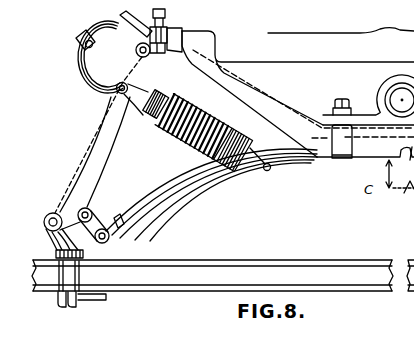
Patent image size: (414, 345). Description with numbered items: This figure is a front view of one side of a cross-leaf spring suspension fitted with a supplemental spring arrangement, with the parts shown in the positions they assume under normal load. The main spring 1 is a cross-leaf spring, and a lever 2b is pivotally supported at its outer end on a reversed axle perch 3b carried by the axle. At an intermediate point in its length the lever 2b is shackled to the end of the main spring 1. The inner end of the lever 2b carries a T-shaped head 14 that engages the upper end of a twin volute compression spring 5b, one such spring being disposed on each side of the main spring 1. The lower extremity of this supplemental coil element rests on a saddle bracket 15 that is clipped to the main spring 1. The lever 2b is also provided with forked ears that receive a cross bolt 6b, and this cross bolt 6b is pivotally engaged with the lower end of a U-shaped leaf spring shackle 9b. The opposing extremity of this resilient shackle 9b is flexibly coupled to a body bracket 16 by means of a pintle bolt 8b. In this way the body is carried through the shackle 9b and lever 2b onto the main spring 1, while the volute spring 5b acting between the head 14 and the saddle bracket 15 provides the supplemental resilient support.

The main spring 1 is at (158, 193).
The lever 2b is at (84, 177).
The reversed axle perch 3b is at (57, 240).
The twin volute compression spring 5b is at (188, 104).
The cross bolt 6b is at (129, 87).
The pintle bolt 8b is at (135, 51).
The U-shaped leaf spring shackle 9b is at (80, 58).
The T-shaped head 14 is at (146, 118).
The saddle bracket 15 is at (225, 179).
The body bracket 16 is at (166, 30).